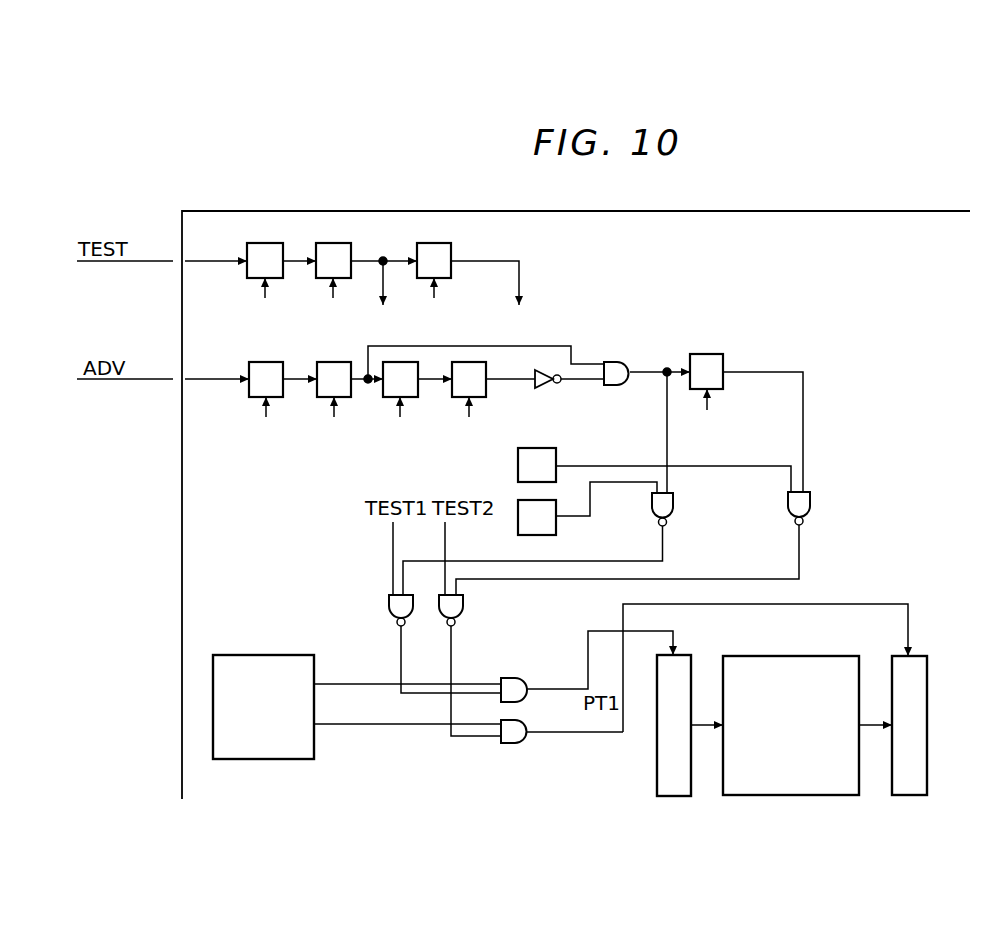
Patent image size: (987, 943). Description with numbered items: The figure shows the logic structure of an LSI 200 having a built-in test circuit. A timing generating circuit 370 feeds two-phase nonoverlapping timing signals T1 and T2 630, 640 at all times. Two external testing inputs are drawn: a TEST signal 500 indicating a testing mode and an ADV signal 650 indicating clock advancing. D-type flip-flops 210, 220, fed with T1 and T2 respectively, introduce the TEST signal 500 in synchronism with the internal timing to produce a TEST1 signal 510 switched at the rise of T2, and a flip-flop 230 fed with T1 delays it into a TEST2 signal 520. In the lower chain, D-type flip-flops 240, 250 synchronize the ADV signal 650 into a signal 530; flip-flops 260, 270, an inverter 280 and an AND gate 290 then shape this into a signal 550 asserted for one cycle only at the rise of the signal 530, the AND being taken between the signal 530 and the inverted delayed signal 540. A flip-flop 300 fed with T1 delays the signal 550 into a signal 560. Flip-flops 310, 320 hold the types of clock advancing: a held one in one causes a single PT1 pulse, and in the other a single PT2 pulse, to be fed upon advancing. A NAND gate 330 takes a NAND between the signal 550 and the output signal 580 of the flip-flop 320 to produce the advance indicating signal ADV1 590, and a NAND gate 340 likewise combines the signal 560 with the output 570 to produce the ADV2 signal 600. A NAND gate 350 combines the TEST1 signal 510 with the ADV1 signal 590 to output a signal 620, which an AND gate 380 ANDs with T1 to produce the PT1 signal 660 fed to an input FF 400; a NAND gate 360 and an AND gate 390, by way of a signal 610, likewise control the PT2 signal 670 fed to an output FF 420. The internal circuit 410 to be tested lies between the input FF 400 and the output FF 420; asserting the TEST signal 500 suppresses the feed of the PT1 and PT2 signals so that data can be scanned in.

The LSI 200 is at (236, 211).
The flip-flop 210 is at (256, 243).
The flip-flop 220 is at (325, 243).
The flip-flop 230 is at (419, 243).
The flip-flop 240 is at (267, 362).
The flip-flop 250 is at (335, 362).
The flip-flop 260 is at (418, 390).
The flip-flop 270 is at (486, 390).
The inverter 280 is at (546, 389).
The AND gate 290 is at (618, 362).
The flip-flop 300 is at (695, 354).
The flip-flop 310 is at (540, 448).
The flip-flop 320 is at (518, 514).
The NAND gate 330 is at (675, 502).
The NAND gate 340 is at (812, 504).
The NAND gate 350 is at (389, 605).
The NAND gate 360 is at (465, 612).
The timing generating circuit 370 is at (260, 655).
The AND gate 380 is at (512, 678).
The AND gate 390 is at (514, 720).
The input FF 400 is at (683, 655).
The internal circuit 410 is at (782, 656).
The output FF 420 is at (922, 656).
The TEST signal 500 is at (142, 262).
The TEST1 signal 510 is at (381, 270).
The TEST2 signal 520 is at (486, 262).
The signal 530 is at (438, 346).
The signal 540 is at (588, 380).
The signal 550 is at (666, 398).
The signal 560 is at (805, 428).
The output signal 570 is at (603, 466).
The output signal 580 is at (622, 483).
The ADV1 signal 590 is at (665, 546).
The ADV2 signal 600 is at (802, 558).
The signal 610 is at (453, 660).
The signal 620 is at (399, 655).
The timing signal T1 630 is at (374, 687).
The timing signal T2 640 is at (377, 727).
The ADV signal 650 is at (132, 380).
The PT1 signal 660 is at (596, 631).
The PT2 signal 670 is at (570, 734).